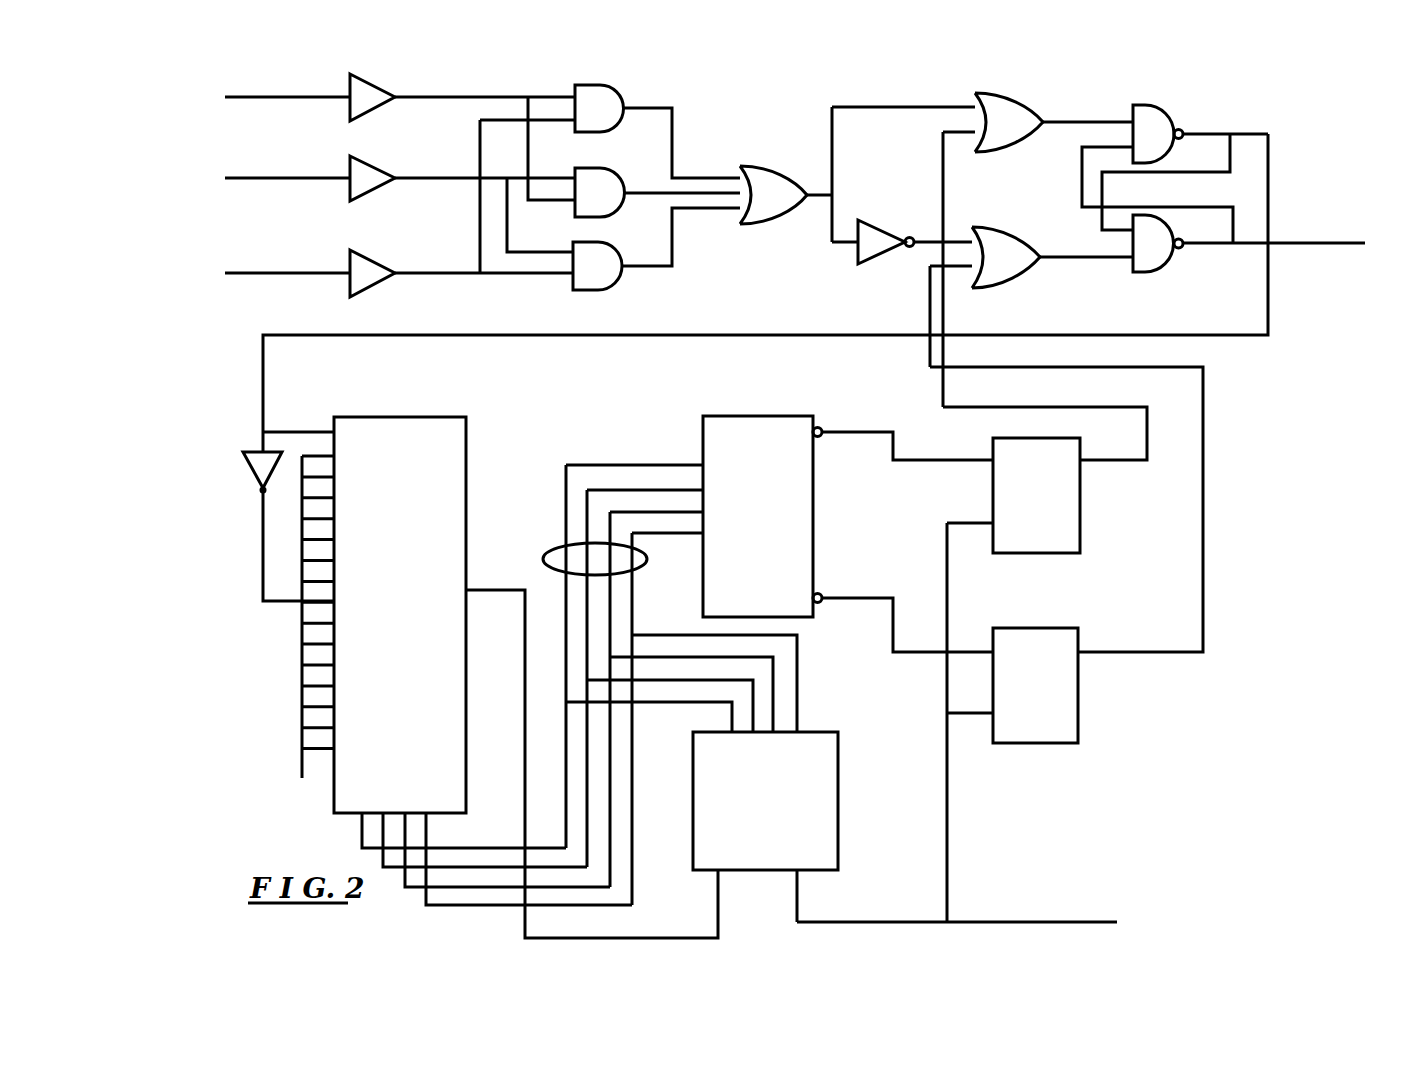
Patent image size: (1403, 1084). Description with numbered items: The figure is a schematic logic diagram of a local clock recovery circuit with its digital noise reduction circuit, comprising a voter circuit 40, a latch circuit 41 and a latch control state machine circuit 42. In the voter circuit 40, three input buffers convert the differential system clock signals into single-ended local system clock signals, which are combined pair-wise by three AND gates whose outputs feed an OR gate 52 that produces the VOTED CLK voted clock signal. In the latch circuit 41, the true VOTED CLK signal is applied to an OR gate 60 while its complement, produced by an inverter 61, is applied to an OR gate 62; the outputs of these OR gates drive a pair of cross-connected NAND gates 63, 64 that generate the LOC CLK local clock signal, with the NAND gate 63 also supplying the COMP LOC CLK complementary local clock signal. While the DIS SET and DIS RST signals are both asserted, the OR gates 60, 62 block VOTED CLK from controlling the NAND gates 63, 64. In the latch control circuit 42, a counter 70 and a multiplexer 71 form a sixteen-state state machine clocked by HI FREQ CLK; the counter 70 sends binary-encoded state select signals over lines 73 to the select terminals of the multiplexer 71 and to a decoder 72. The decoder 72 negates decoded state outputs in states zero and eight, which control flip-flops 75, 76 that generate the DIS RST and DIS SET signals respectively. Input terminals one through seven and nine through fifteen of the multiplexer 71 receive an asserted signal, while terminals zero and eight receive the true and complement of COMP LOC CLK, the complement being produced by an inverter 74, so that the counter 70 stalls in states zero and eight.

The voter circuit 40 is at (684, 100).
The latch circuit 41 is at (808, 103).
The latch control state machine circuit 42 is at (426, 389).
The OR gate 52 is at (773, 195).
The OR gate 60 is at (1009, 122).
The inverter 61 is at (870, 229).
The OR gate 62 is at (1006, 257).
The NAND gate 63 is at (1158, 134).
The NAND gate 64 is at (1158, 243).
The counter 70 is at (838, 783).
The multiplexer 71 is at (466, 478).
The decoder 72 is at (813, 501).
The lines 73 is at (545, 553).
The inverter 74 is at (254, 475).
The flip-flop 75 is at (1035, 553).
The flip-flop 76 is at (1035, 628).